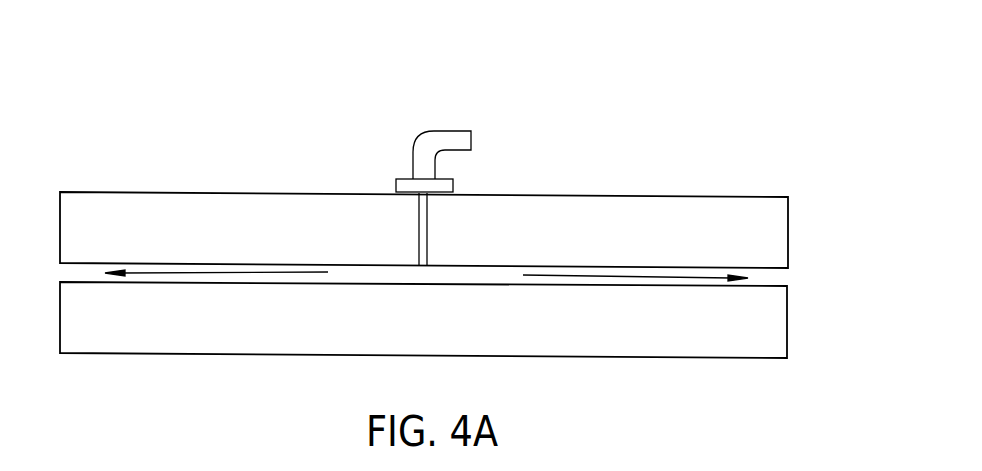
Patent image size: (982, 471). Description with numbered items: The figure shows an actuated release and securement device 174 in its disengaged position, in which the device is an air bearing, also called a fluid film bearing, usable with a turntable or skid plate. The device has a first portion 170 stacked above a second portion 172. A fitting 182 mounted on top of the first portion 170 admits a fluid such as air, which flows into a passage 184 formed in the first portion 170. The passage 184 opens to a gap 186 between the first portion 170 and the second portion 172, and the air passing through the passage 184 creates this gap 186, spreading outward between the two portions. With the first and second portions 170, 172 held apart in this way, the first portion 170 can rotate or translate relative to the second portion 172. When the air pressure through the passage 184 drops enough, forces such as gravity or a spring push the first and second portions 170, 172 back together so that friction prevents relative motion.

The first portion 170 is at (713, 197).
The second portion 172 is at (770, 358).
The release and securement device 174 is at (419, 100).
The fitting 182 is at (453, 131).
The passage 184 is at (427, 235).
The gap 186 is at (783, 277).